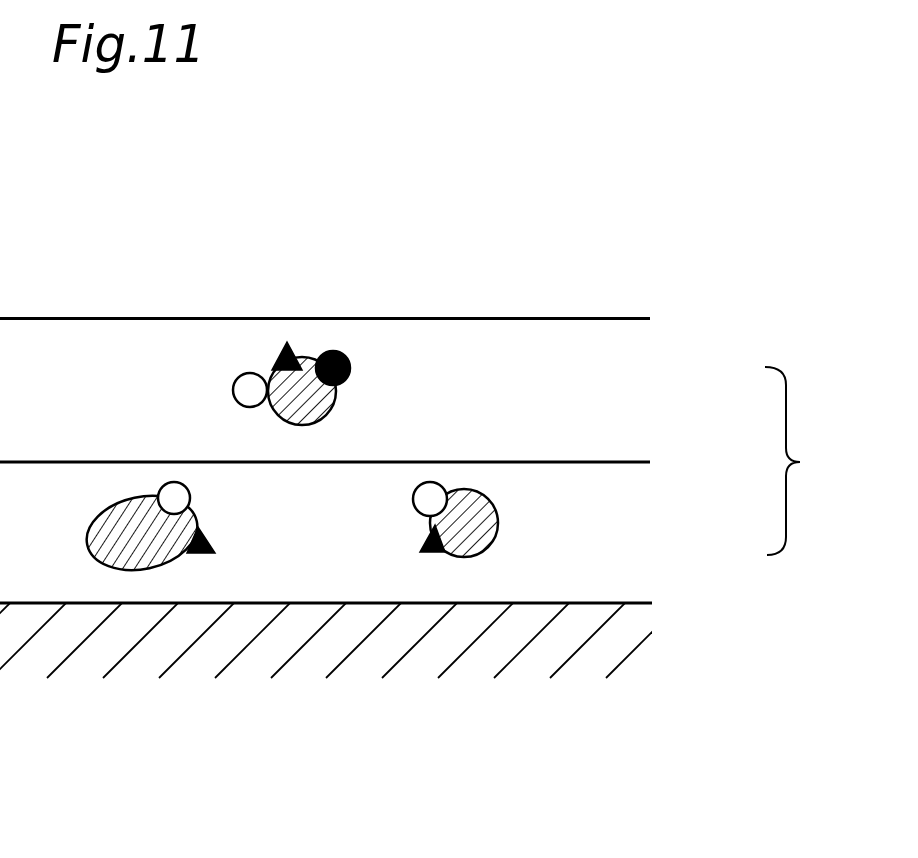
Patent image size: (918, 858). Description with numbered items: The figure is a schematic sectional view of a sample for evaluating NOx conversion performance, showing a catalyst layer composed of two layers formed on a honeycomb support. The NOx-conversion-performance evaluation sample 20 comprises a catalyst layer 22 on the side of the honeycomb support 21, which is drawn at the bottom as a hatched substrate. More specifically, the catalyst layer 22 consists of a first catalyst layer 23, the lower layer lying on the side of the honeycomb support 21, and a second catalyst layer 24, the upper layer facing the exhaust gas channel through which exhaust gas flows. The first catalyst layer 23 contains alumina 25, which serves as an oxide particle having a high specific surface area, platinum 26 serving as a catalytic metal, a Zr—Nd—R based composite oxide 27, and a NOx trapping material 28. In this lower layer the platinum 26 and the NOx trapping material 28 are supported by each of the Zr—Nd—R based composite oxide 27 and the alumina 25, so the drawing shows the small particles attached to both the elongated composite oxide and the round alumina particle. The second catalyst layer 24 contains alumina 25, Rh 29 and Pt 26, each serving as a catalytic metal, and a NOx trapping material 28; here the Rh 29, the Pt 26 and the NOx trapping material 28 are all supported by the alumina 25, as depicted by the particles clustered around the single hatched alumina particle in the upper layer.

The NOx-conversion-performance evaluation sample 20 is at (650, 236).
The honeycomb support 21 is at (658, 628).
The catalyst layer 22 is at (806, 461).
The first catalyst layer 23 is at (646, 528).
The second catalyst layer 24 is at (646, 405).
The alumina 25 is at (308, 360).
The platinum 26 is at (232, 387).
The Zr—Nd—R based composite oxide 27 is at (100, 560).
The NOx trapping material 28 is at (273, 357).
The Rh 29 is at (345, 353).